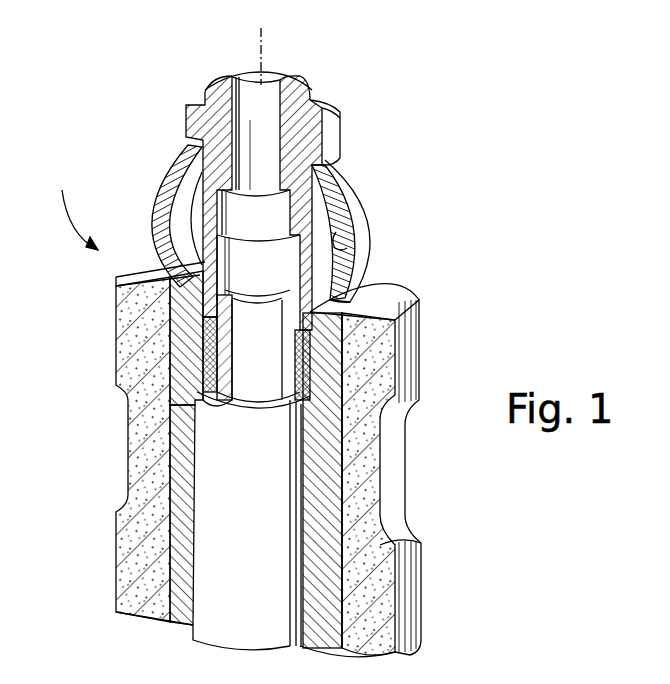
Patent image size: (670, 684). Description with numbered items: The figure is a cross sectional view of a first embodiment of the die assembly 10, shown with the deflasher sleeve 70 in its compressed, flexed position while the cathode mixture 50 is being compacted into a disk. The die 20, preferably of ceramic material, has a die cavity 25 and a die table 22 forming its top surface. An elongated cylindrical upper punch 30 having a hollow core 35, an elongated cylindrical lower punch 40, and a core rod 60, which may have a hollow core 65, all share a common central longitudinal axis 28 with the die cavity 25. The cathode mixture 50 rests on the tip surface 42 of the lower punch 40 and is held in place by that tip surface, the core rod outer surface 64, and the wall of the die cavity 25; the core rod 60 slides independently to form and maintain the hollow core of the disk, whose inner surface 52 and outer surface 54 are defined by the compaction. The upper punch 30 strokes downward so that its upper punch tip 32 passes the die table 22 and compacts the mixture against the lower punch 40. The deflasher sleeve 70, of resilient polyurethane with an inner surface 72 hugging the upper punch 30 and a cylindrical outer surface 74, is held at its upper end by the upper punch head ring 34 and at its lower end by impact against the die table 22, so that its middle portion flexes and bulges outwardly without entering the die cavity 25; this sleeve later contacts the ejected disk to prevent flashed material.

The die assembly 10 is at (70, 208).
The die 20 is at (422, 334).
The die table 22 is at (398, 296).
The die cavity 25 is at (318, 356).
The central longitudinal axis 28 is at (259, 46).
The upper punch 30 is at (316, 100).
The upper punch tip 32 is at (178, 298).
The upper punch head ring 34 is at (338, 140).
The hollow core 35 is at (272, 82).
The lower punch 40 is at (206, 497).
The tip surface of lower punch 42 is at (212, 394).
The cathode mixture 50 is at (182, 345).
The inner surface 52 is at (210, 375).
The outer surface 54 is at (344, 394).
The core rod 60 is at (245, 390).
The core rod outer surface 64 is at (330, 398).
The hollow core 65 is at (302, 440).
The deflasher sleeve 70 is at (358, 200).
The inner surface 72 is at (346, 250).
The cylindrical outer surface 74 is at (358, 268).